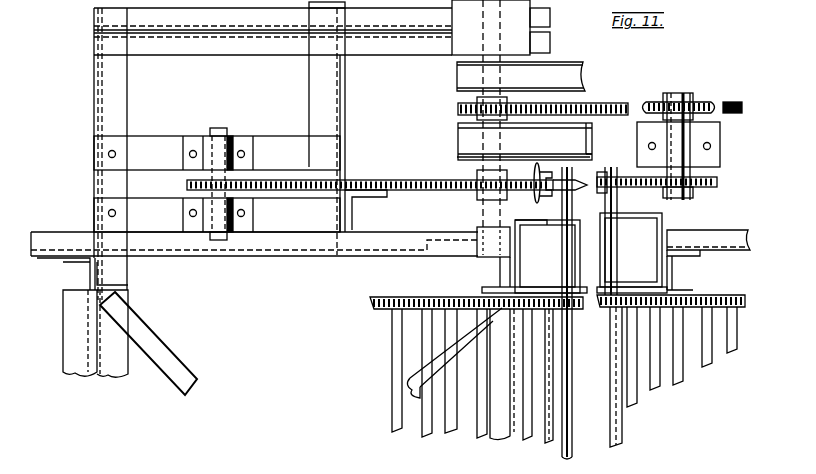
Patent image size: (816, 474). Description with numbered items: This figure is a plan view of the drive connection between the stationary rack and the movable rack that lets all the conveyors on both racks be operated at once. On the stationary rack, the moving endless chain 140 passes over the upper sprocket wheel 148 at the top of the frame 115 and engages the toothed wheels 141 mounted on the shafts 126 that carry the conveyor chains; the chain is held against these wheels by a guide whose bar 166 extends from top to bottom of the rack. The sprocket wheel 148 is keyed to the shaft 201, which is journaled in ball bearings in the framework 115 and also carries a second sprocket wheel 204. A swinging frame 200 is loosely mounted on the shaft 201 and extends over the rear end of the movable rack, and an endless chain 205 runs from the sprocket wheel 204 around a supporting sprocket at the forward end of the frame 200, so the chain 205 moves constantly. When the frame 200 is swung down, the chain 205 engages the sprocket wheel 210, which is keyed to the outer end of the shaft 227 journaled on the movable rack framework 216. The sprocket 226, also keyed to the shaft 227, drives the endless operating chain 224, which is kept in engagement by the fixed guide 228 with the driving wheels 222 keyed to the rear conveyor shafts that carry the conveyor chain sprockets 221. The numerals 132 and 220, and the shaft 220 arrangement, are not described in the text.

The frame upright 132 is at (89, 2).
The frame 115 is at (262, 248).
The endless chain 140 is at (440, 182).
The sprocket wheel 148 is at (467, 188).
The swinging frame 200 is at (574, 77).
The shaft 201 is at (492, 205).
The second sprocket wheel 204 is at (458, 108).
The endless chain 205 is at (597, 109).
The bar 166 is at (539, 160).
The fixed guide 228 is at (587, 168).
The sprocket wheel 210 is at (699, 108).
The driving wheels 222 is at (622, 177).
The sprocket 226 is at (700, 188).
The endless operating chain 224 is at (634, 189).
The shaft 227 is at (672, 194).
The framework 216 is at (720, 248).
The toothed wheels 141 is at (580, 190).
The conveyor chain sprockets 221 is at (572, 314).
The shafts 126 is at (573, 364).
The shaft 220 is at (612, 400).